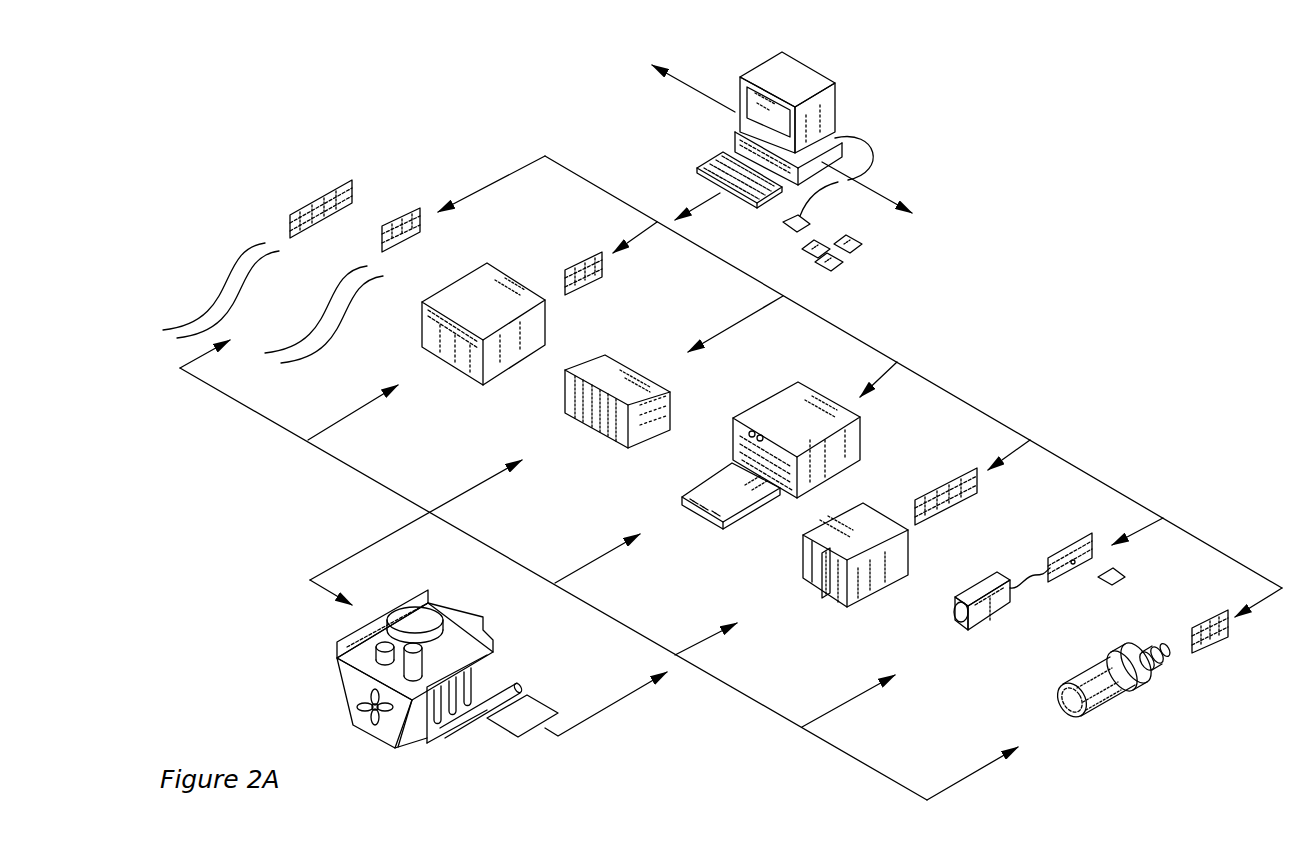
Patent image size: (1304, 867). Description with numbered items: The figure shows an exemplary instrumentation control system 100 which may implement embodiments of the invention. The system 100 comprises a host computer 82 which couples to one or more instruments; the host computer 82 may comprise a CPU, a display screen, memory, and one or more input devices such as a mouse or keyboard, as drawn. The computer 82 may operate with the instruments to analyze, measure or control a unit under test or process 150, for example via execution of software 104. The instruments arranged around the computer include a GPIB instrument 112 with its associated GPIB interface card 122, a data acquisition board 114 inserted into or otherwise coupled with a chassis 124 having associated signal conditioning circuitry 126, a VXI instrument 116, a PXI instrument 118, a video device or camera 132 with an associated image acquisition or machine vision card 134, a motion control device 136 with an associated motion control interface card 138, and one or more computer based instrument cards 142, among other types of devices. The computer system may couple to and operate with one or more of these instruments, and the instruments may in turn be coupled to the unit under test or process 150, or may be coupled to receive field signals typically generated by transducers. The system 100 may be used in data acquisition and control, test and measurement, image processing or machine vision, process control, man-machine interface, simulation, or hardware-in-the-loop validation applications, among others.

The host computer 82 is at (808, 66).
The instrumentation control system 100 is at (1083, 128).
The software 104 is at (830, 267).
The GPIB instrument 112 is at (445, 293).
The data acquisition board 114 is at (950, 538).
The VXI instrument 116 is at (770, 405).
The PXI instrument 118 is at (600, 433).
The GPIB interface card 122 is at (577, 263).
The chassis 124 is at (831, 573).
The signal conditioning circuitry 126 is at (830, 588).
The video device or camera 132 is at (992, 618).
The image acquisition card 134 is at (1058, 545).
The motion control device 136 is at (1107, 703).
The motion control interface card 138 is at (1212, 647).
The computer based instrument cards 142 is at (307, 203).
The unit under test or process 150 is at (350, 690).